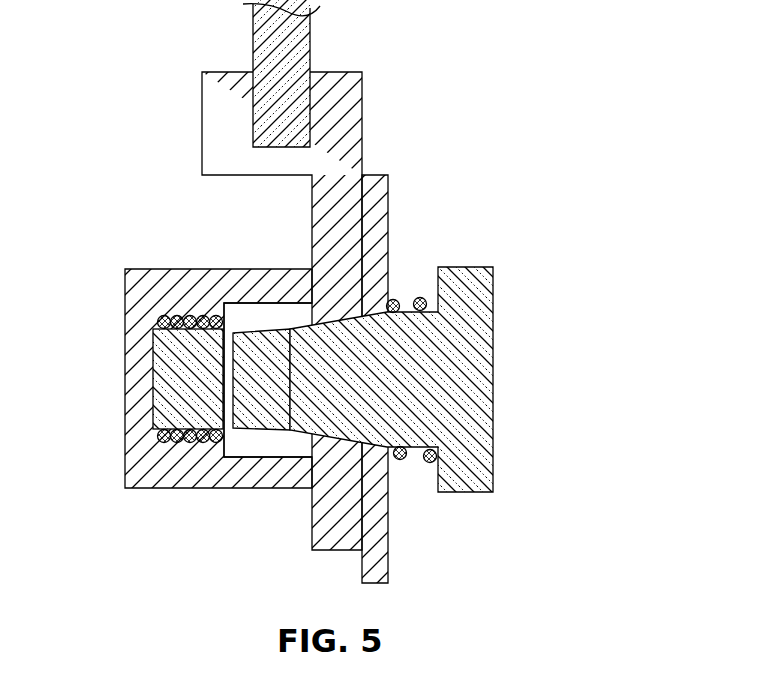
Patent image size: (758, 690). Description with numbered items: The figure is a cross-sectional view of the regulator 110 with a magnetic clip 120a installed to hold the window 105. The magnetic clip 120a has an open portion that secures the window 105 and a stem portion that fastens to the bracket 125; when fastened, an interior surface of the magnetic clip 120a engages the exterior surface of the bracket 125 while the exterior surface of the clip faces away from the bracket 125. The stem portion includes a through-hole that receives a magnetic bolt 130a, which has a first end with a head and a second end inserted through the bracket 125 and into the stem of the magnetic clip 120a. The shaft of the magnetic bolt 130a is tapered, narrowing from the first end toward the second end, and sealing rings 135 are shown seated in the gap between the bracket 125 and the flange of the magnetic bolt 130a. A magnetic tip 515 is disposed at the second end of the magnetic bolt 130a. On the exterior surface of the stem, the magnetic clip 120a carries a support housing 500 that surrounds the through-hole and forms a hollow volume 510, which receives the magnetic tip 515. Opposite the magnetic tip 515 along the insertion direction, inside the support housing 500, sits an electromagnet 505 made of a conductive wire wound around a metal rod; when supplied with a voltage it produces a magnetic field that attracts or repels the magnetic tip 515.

The regulator 110 is at (377, 294).
The magnetic clip 120a is at (202, 72).
The window 105 is at (311, 42).
The bracket 125 is at (388, 175).
The O-ring seals 135 is at (395, 302).
The magnetic bolt 130a is at (472, 522).
The support housing 500 is at (125, 395).
The electromagnet 505 is at (153, 330).
The hollow volume 510 is at (253, 447).
The magnetic tip 515 is at (248, 328).